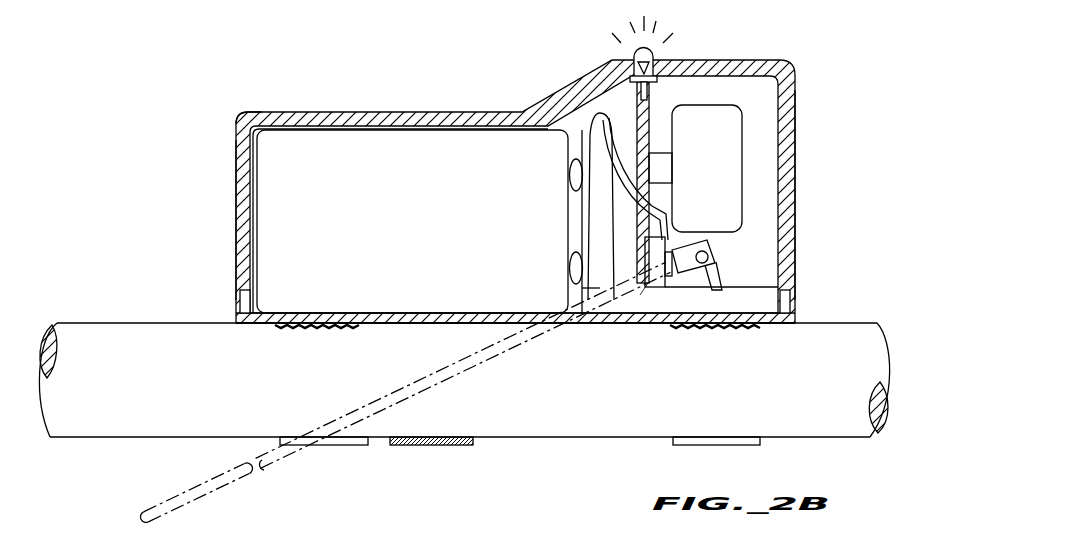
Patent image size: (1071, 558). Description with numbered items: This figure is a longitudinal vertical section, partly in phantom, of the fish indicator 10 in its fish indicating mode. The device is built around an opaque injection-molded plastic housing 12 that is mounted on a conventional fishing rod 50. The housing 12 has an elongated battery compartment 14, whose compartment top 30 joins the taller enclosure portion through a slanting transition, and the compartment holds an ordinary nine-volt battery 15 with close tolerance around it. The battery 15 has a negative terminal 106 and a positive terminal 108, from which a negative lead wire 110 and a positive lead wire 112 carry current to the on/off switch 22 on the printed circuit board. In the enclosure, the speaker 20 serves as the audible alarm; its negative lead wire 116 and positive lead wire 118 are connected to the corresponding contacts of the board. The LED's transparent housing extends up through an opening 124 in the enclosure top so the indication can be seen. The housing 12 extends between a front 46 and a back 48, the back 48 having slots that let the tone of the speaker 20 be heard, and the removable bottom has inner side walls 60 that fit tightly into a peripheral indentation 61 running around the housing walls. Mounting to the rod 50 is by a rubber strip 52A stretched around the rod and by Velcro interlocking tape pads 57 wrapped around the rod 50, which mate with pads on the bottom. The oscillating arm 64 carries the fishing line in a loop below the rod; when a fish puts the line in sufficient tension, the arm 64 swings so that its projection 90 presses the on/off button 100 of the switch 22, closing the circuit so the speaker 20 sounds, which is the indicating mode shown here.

The fish indicator 10 is at (445, 174).
The housing 12 is at (373, 62).
The battery compartment 14 is at (318, 130).
The battery 15 is at (419, 221).
The speaker 20 is at (717, 143).
The on/off switch 22 is at (648, 290).
The compartment top 30 is at (247, 117).
The front 46 is at (240, 180).
The back 48 is at (793, 97).
The rod 50 is at (125, 428).
The rubber strip 52A is at (440, 445).
The Velcro interlocking tape pads 57 is at (735, 330).
The inner side walls 60 is at (780, 303).
The peripheral indentation 61 is at (797, 305).
The oscillating arm 64 is at (262, 464).
The projection 90 is at (718, 278).
The on/off button 100 is at (670, 256).
The negative terminal 106 is at (570, 172).
The positive terminal 108 is at (572, 268).
The negative lead wire 110 is at (598, 100).
The positive lead wire 112 is at (603, 220).
The negative lead wire 116 is at (648, 150).
The positive lead wire 118 is at (663, 190).
The opening 124 is at (656, 60).